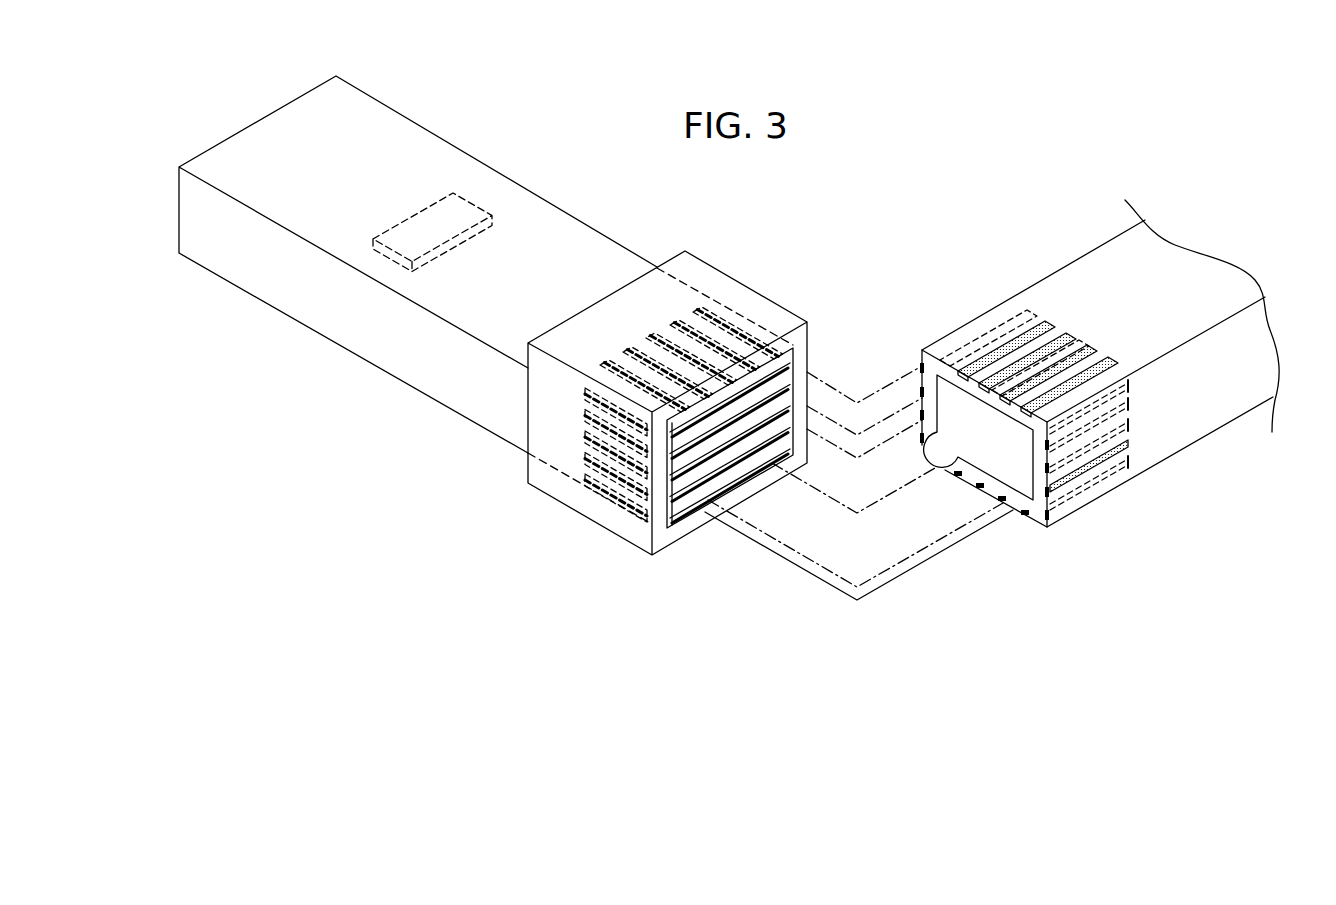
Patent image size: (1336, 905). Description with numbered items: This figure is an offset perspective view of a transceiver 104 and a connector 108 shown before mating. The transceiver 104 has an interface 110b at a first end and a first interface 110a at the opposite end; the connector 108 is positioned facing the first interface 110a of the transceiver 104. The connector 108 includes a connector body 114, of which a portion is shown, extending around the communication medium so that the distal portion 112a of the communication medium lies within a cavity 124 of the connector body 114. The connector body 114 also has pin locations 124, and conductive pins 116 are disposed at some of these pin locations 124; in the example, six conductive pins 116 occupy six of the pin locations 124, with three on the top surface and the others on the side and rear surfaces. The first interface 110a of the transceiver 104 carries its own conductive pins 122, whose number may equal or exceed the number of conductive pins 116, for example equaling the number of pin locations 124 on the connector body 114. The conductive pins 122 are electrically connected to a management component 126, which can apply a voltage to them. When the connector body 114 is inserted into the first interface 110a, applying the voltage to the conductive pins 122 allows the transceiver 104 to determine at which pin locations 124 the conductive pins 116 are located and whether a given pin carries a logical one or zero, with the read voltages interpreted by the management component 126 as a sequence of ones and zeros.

The transceiver 104 is at (732, 240).
The connector 108 is at (1165, 212).
The first interface 110a is at (813, 458).
The first interface 110b is at (233, 134).
The distal portion 112a is at (947, 472).
The connector body 114 is at (1090, 250).
The conductive pins 116 is at (1110, 362).
The conductive pins 122 is at (673, 328).
The pin locations 124 is at (1035, 377).
The management component 126 is at (476, 205).